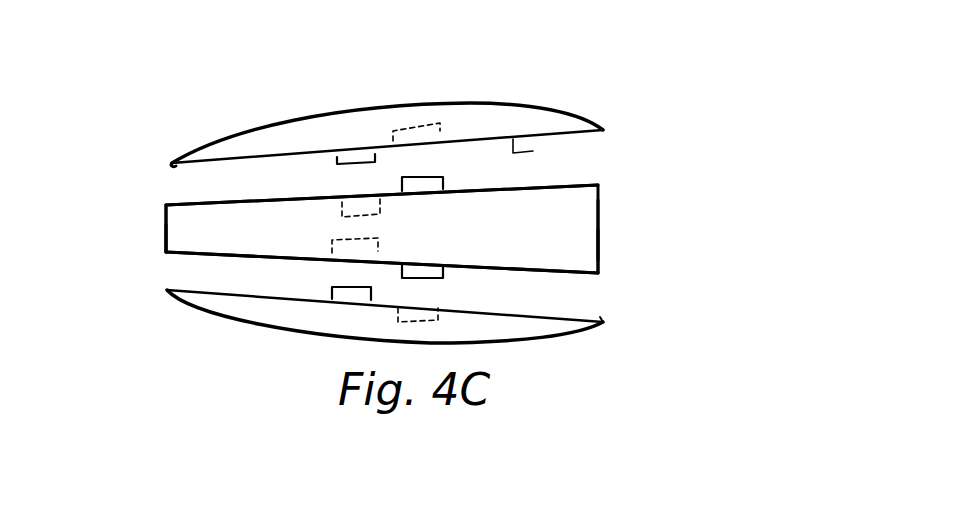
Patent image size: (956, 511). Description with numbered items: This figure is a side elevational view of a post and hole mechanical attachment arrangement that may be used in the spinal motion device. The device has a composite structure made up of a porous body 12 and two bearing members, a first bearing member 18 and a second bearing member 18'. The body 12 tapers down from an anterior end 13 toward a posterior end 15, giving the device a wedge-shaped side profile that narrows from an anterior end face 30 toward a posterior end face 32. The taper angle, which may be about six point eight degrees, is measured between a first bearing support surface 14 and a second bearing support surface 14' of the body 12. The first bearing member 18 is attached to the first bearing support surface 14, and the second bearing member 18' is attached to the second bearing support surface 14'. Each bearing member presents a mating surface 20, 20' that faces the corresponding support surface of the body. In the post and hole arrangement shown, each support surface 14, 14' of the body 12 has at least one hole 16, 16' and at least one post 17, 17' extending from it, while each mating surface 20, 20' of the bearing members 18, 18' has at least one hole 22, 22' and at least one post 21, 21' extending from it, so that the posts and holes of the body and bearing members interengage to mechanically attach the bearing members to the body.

The porous body 12 is at (587, 212).
The anterior end 13 is at (610, 258).
The first bearing support surface 14 is at (382, 190).
The second bearing support surface 14' is at (382, 265).
The posterior end 15 is at (157, 238).
The hole 16 is at (385, 212).
The hole 16' is at (382, 243).
The post 17 is at (441, 178).
The post 17' is at (445, 277).
The first bearing member 18 is at (387, 118).
The second bearing member 18' is at (385, 336).
The mating surface 20 is at (541, 150).
The mating surface 20' is at (562, 304).
The post 21 is at (329, 168).
The post 21' is at (321, 285).
The hole 22 is at (436, 130).
The hole 22' is at (438, 323).
The anterior end face 30 is at (602, 225).
The posterior end face 32 is at (162, 220).